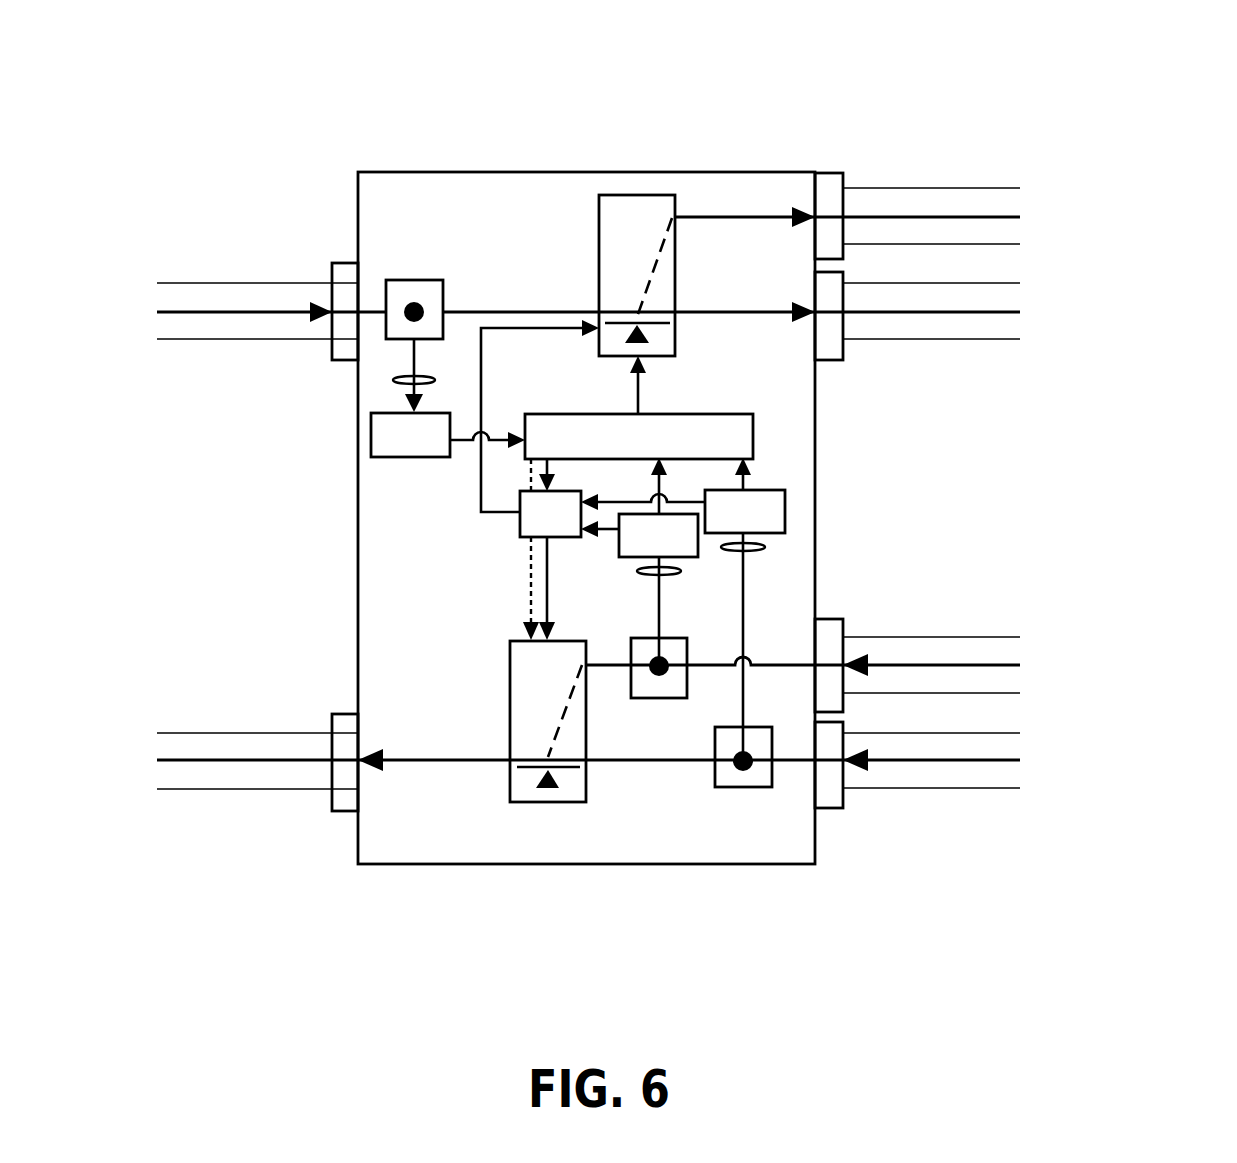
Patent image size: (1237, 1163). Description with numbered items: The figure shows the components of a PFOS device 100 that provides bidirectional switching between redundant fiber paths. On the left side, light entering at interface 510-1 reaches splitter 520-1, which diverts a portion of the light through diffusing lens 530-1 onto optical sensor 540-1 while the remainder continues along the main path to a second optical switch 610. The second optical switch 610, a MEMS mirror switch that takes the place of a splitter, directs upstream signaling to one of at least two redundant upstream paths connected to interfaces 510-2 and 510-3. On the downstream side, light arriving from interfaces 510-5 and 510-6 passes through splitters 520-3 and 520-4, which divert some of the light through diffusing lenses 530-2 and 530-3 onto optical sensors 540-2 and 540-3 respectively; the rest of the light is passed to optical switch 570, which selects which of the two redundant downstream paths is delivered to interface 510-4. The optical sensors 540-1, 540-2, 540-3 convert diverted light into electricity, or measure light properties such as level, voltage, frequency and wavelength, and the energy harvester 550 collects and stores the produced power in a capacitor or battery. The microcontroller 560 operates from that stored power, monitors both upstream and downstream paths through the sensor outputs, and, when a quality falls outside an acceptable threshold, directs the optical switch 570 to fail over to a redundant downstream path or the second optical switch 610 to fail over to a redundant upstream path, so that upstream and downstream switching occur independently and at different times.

The PFOS device 100 is at (418, 56).
The interface 510-1 is at (335, 262).
The interface 510-2 is at (843, 173).
The interface 510-3 is at (843, 360).
The interface 510-4 is at (330, 713).
The interface 510-5 is at (843, 619).
The interface 510-6 is at (843, 808).
The light splitter 520-1 is at (413, 278).
The light splitter 520-3 is at (657, 698).
The light splitter 520-4 is at (748, 788).
The diffusing lens 530-1 is at (397, 380).
The diffusing lens 530-2 is at (642, 571).
The diffusing lens 530-3 is at (763, 547).
The optical sensor 540-1 is at (448, 435).
The optical sensor 540-2 is at (639, 507).
The optical sensor 540-3 is at (683, 495).
The energy harvester 550 is at (639, 423).
The microcontroller 560 is at (540, 480).
The optical switch 570 is at (508, 702).
The second optical switch 610 is at (635, 193).